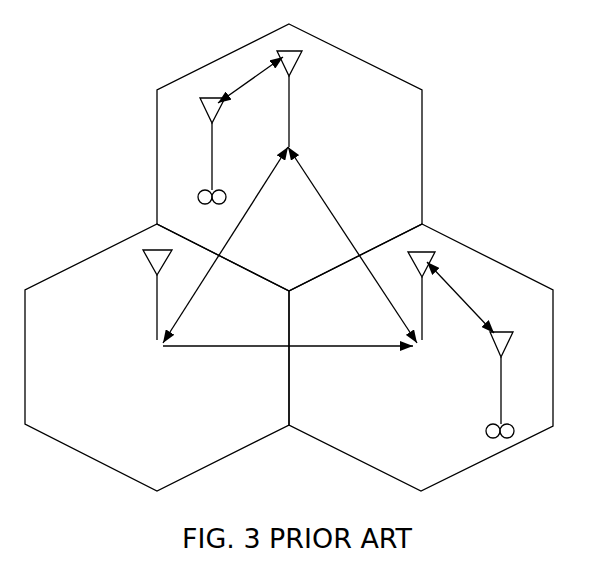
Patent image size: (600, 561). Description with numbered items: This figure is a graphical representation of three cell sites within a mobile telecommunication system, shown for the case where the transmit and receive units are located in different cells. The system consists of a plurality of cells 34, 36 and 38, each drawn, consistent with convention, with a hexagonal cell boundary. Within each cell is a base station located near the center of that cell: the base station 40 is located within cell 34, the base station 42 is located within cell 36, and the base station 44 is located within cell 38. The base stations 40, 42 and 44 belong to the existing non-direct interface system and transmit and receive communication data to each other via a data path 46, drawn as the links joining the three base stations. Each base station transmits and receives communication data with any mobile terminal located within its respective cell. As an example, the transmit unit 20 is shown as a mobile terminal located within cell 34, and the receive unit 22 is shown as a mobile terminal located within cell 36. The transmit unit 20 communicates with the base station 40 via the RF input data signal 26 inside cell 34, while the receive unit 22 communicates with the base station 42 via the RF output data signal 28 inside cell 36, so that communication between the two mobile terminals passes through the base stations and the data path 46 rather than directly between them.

The transmit unit 20 is at (198, 151).
The receive unit 22 is at (479, 385).
The RF input data signal 26 is at (247, 80).
The RF output data signal 28 is at (482, 284).
The cell 34 is at (404, 116).
The cell 36 is at (434, 471).
The cell 38 is at (61, 314).
The base station 40 is at (308, 99).
The base station 42 is at (435, 296).
The base station 44 is at (143, 295).
The data path 46 is at (290, 246).